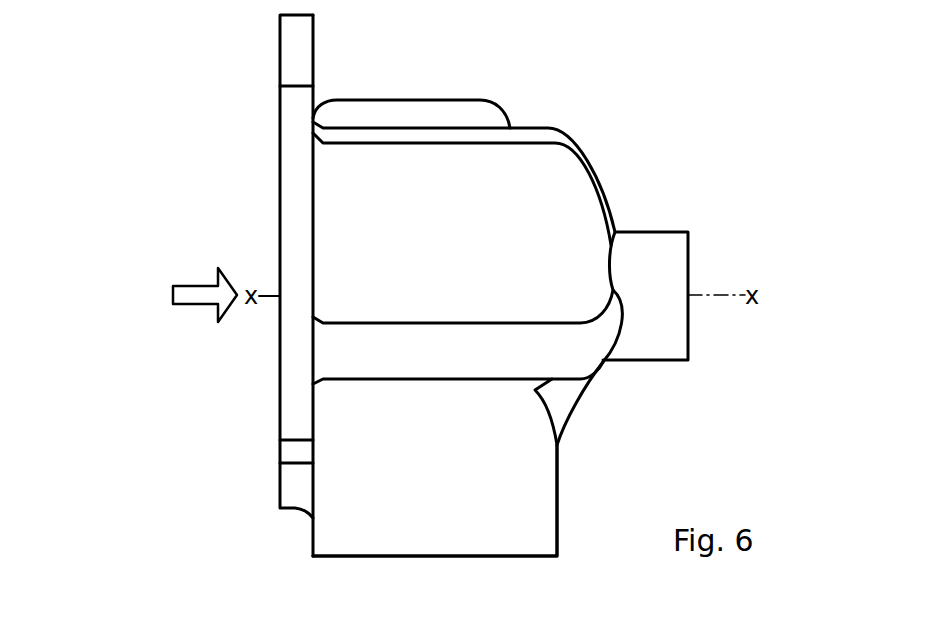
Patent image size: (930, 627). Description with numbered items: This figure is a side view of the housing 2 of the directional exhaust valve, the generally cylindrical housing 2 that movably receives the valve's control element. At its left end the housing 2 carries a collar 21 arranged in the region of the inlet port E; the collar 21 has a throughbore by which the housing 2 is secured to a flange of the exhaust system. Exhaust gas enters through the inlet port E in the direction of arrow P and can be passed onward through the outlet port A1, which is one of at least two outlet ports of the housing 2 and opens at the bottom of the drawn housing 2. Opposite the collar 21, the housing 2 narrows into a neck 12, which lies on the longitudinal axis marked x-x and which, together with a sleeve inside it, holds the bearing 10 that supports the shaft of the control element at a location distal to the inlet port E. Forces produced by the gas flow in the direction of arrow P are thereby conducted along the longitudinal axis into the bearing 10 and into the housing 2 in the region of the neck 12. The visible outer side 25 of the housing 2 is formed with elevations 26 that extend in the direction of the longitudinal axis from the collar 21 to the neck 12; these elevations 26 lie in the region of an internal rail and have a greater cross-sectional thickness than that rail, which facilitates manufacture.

The housing 2 is at (594, 108).
The bearing 10 is at (678, 391).
The neck 12 is at (714, 216).
The collar 21 is at (321, 50).
The outer side 25 is at (521, 106).
The elevations 26 is at (601, 171).
The inlet port E is at (276, 229).
The arrow indicating exhaust gas flow direction P is at (193, 295).
The outlet port A1 is at (443, 561).